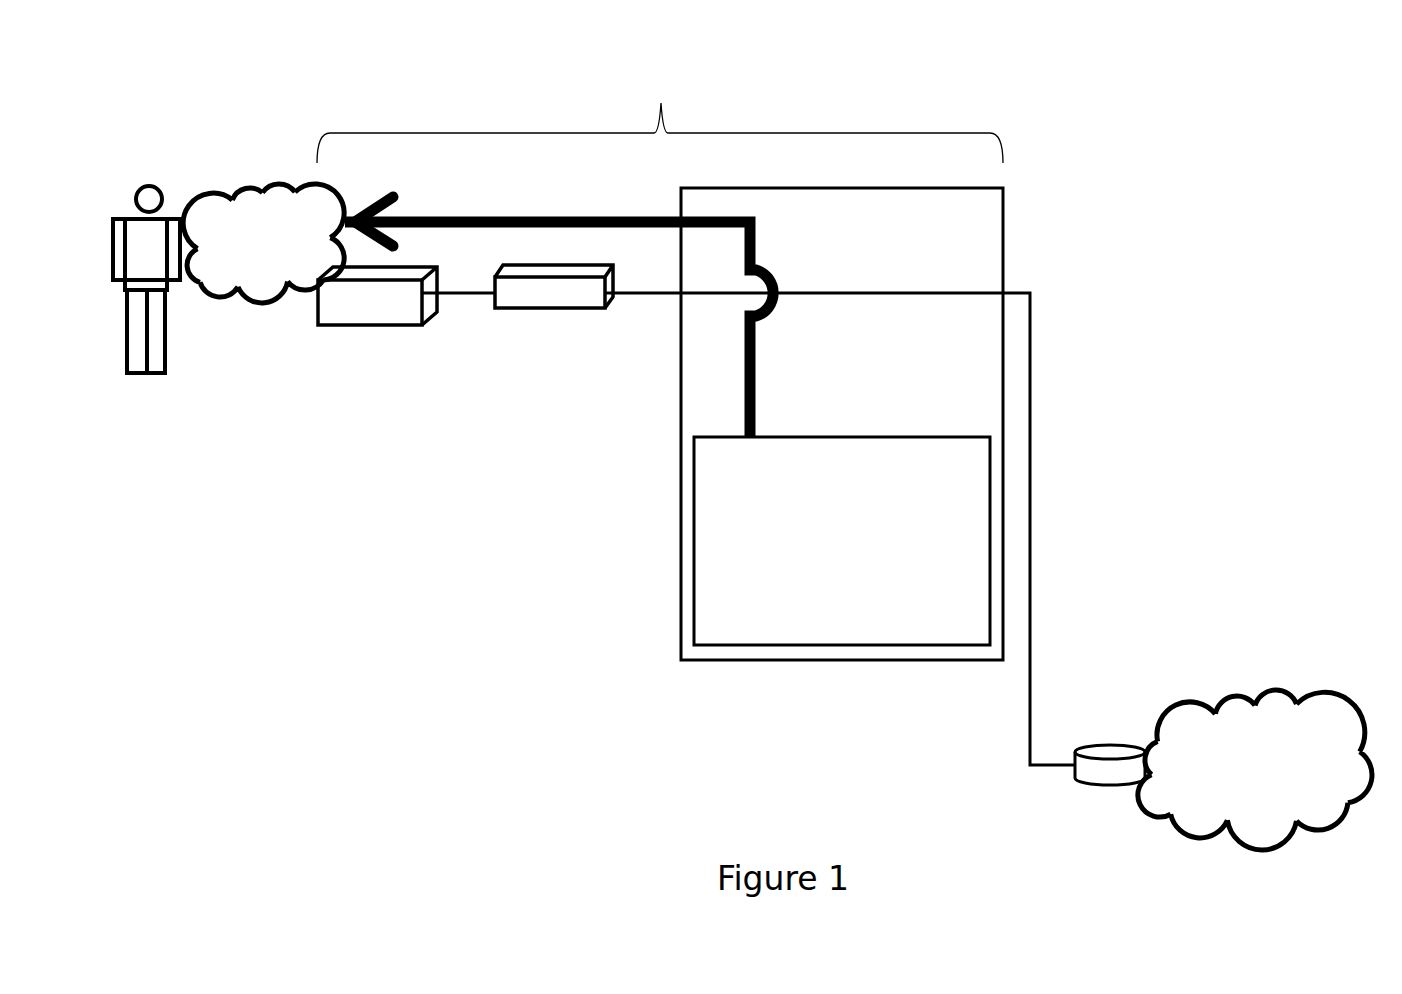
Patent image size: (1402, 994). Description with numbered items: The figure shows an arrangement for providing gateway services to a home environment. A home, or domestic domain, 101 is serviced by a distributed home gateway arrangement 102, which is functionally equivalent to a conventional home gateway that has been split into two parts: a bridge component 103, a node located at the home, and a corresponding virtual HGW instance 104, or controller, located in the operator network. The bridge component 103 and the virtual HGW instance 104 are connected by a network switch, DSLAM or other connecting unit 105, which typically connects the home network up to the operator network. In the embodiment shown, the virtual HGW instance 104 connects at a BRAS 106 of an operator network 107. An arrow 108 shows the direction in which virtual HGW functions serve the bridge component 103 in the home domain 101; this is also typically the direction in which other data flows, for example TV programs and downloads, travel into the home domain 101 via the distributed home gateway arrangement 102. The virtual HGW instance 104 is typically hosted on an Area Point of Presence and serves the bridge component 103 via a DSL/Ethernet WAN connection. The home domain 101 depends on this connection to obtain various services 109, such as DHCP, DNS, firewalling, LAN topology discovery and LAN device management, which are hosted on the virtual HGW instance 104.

The home domain 101 is at (258, 303).
The distributed home gateway arrangement 102 is at (660, 105).
The bridge component 103 is at (368, 326).
The virtual HGW instance 104 is at (727, 663).
The connecting unit 105 is at (548, 308).
The BRAS 106 is at (1110, 747).
The operator network 107 is at (1305, 713).
The arrow 108 is at (742, 388).
The services 109 is at (880, 642).